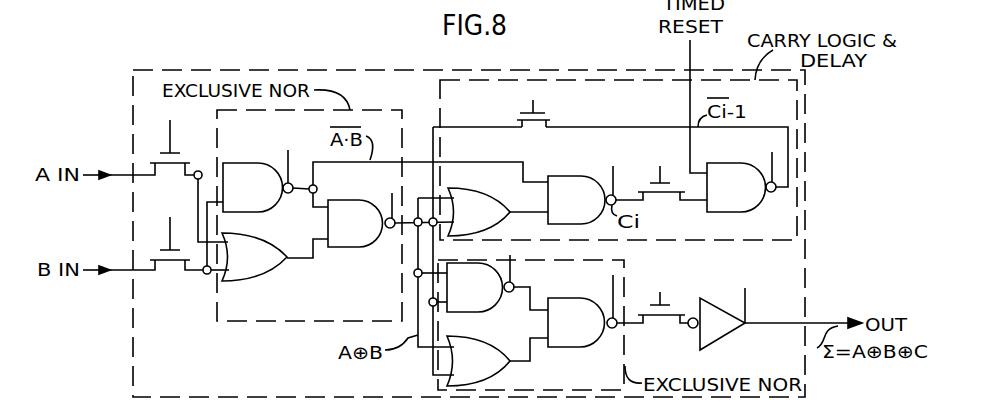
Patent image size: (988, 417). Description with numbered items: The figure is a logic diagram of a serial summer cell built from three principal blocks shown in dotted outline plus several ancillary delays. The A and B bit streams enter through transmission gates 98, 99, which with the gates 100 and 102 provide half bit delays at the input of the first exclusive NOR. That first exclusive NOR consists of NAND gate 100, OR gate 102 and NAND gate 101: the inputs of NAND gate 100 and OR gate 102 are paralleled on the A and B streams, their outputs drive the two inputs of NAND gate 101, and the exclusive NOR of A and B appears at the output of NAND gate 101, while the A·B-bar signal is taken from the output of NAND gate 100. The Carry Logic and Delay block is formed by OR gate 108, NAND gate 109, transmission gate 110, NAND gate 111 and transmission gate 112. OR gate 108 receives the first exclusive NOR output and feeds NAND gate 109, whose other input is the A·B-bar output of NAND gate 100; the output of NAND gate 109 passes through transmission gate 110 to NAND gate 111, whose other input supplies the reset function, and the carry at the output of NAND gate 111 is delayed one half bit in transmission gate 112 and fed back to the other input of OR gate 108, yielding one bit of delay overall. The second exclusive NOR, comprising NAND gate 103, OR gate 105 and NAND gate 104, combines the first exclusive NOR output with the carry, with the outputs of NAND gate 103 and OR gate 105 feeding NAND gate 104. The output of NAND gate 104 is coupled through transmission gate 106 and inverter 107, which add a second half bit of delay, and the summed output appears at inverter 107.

The transmission gate 98 is at (167, 167).
The transmission gate 99 is at (170, 265).
The NAND gate 100 is at (245, 163).
The NAND gate 101 is at (363, 200).
The OR gate 102 is at (257, 282).
The NAND gate 103 is at (487, 263).
The NAND gate 104 is at (575, 298).
The OR gate 105 is at (480, 336).
The transmission gate 106 is at (663, 320).
The inverter 107 is at (728, 338).
The OR gate 108 is at (474, 192).
The NAND gate 109 is at (582, 176).
The transmission gate 110 is at (663, 197).
The NAND gate 111 is at (727, 163).
The transmission gate 112 is at (537, 130).